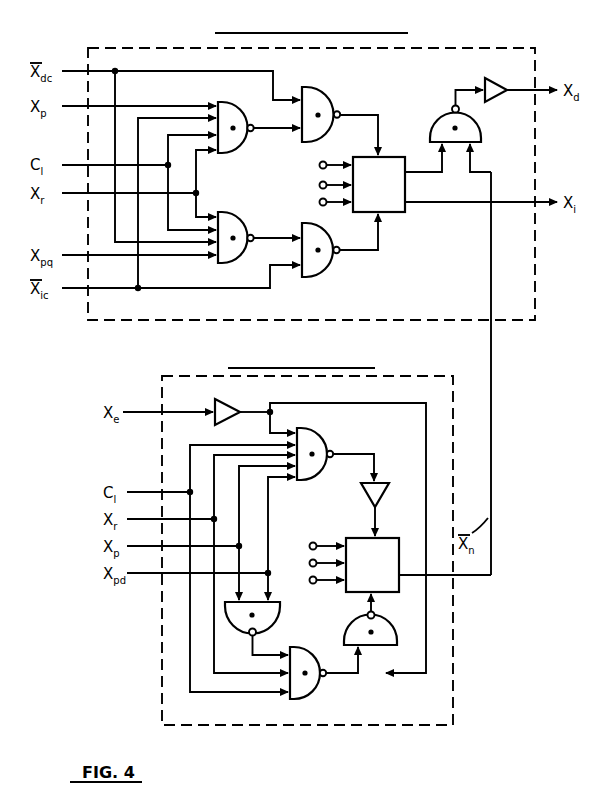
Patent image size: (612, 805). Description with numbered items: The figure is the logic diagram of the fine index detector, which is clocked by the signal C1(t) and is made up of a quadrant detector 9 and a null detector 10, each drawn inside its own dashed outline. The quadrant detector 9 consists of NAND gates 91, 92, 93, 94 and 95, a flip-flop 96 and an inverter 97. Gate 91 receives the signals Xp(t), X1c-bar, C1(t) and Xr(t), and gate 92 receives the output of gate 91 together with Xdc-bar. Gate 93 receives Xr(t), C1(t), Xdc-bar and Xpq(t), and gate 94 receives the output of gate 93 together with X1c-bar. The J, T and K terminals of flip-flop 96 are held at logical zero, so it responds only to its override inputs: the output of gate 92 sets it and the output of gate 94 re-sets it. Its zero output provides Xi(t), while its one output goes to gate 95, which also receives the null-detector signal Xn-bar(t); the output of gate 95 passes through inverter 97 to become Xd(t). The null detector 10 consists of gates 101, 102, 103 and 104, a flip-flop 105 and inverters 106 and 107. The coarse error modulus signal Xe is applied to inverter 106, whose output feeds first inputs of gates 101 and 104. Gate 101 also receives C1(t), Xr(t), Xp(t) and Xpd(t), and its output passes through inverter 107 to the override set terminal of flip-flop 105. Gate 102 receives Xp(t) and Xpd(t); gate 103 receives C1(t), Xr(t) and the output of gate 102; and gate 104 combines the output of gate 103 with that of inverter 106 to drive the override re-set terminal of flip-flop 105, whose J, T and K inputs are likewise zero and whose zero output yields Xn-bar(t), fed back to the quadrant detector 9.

The quadrant detector 9 is at (193, 45).
The null detector 10 is at (194, 378).
The NAND gate 91 is at (231, 117).
The NAND gate 92 is at (321, 93).
The NAND gate 93 is at (236, 250).
The NAND gate 94 is at (327, 259).
The NAND gate 95 is at (437, 132).
The flip-flop 96 is at (405, 184).
The inverter 97 is at (493, 80).
The gate 101 is at (316, 437).
The gate 102 is at (266, 614).
The gate 103 is at (320, 683).
The gate 104 is at (356, 626).
The flip-flop 105 is at (364, 546).
The inverter 106 is at (232, 405).
The inverter 107 is at (358, 487).